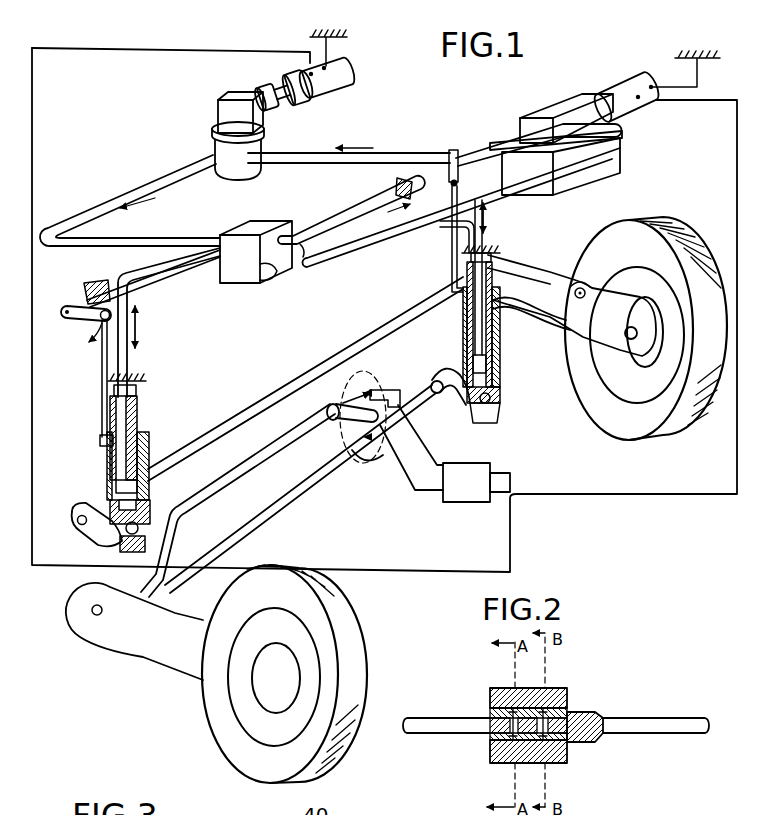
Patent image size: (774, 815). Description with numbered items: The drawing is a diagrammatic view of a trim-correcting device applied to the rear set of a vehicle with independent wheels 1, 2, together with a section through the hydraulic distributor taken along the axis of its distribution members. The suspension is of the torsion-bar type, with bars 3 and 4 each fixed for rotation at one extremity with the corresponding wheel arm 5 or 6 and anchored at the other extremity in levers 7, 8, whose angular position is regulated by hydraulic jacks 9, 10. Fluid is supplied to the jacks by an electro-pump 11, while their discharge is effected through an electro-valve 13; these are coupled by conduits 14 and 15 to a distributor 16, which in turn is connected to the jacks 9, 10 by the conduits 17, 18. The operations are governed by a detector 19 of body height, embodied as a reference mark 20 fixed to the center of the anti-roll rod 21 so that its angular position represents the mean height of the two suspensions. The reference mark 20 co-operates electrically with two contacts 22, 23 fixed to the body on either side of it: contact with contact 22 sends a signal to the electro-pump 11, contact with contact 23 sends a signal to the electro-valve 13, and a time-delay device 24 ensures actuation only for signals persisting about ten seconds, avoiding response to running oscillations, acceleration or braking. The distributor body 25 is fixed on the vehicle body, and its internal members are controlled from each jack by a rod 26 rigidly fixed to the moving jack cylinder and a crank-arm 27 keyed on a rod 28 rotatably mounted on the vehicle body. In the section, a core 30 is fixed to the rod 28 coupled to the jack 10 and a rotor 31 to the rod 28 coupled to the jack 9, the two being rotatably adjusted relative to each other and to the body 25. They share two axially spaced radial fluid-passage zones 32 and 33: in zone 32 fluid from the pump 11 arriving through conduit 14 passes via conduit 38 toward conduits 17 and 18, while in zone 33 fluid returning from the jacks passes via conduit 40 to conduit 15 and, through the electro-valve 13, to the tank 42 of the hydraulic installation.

In FIG. 1, the wheel 1 is at (200, 711).
In FIG. 1, the wheel 2 is at (678, 218).
In FIG. 1, the torsion bar 3 is at (226, 527).
In FIG. 1, the torsion bar 4 is at (247, 405).
In FIG. 1, the wheel arm 5 is at (145, 640).
In FIG. 1, the wheel arm 6 is at (528, 279).
In FIG. 1, the lever 7 is at (453, 408).
In FIG. 1, the lever 8 is at (90, 534).
In FIG. 1, the hydraulic jack 9 is at (502, 368).
In FIG. 1, the hydraulic jack 10 is at (108, 475).
In FIG. 1, the electro-pump 11 is at (263, 76).
In FIG. 1, the electro-valve 13 is at (555, 106).
In FIG. 1, the conduit 14 is at (134, 236).
In FIG. 1, the conduit 15 is at (472, 174).
In FIG. 1, the distributor 16 is at (269, 218).
In FIG. 2, the distributor 16 is at (480, 695).
In FIG. 1, the conduit 17 is at (357, 258).
In FIG. 1, the conduit 18 is at (128, 328).
In FIG. 1, the detector 19 is at (355, 464).
In FIG. 1, the reference mark 20 is at (343, 408).
In FIG. 1, the anti-roll rod 21 is at (218, 481).
In FIG. 1, the contact 22 is at (383, 390).
In FIG. 1, the contact 23 is at (384, 450).
In FIG. 1, the time-delay device 24 is at (458, 502).
In FIG. 2, the distributor body 25 is at (568, 690).
In FIG. 1, the rod 26 is at (101, 379).
In FIG. 1, the crank-arm 27 is at (446, 156).
In FIG. 1, the rod 28 is at (325, 214).
In FIG. 2, the rod 28 is at (430, 728).
In FIG. 2, the core 30 is at (526, 742).
In FIG. 2, the rotor 31 is at (532, 742).
In FIG. 2, the fluid-passage zone 32 is at (513, 703).
In FIG. 2, the fluid-passage zone 33 is at (543, 703).
In FIG. 1, the conduit 38 is at (264, 267).
In FIG. 1, the conduit 40 is at (308, 247).
In FIG. 1, the tank 42 is at (575, 182).